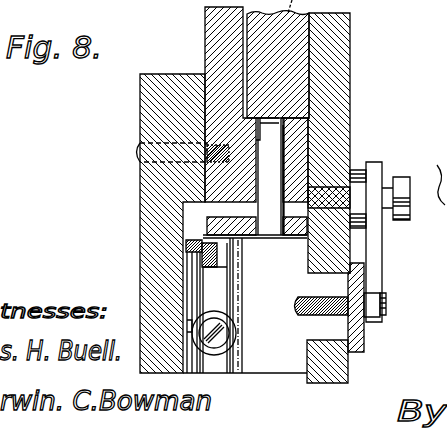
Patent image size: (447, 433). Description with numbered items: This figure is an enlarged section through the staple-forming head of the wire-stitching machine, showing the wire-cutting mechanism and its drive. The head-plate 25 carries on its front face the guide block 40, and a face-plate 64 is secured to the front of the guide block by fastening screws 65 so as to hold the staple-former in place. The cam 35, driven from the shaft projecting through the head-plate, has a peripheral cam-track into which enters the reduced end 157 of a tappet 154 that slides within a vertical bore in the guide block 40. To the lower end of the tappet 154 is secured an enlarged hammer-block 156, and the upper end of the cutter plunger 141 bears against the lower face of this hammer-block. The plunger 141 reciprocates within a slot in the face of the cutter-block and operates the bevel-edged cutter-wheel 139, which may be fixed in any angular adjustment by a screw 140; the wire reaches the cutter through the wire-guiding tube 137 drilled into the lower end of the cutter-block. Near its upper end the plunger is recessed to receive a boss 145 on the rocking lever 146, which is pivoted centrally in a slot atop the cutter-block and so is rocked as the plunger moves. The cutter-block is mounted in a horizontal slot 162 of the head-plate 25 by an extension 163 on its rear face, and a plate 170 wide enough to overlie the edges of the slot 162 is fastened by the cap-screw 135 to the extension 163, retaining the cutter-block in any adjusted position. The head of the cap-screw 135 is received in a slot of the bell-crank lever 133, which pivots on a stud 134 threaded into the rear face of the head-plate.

The head-plate 25 is at (345, 42).
The cam 35 is at (303, 60).
The guide block 40 is at (230, 57).
The face-plate 64 is at (153, 190).
The fastening screws 65 is at (136, 148).
The bell-crank lever 133 is at (377, 175).
The stud 134 is at (385, 226).
The cap-screw 135 is at (386, 294).
The wire-guiding tube 137 is at (213, 362).
The cutter-wheel 139 is at (240, 362).
The screw 140 is at (230, 333).
The cutter plunger 141 is at (215, 297).
The boss 145 is at (217, 258).
The rocking lever 146 is at (203, 238).
The tappet 154 is at (270, 162).
The hammer-block 156 is at (292, 237).
The reduced end of tappet 157 is at (283, 128).
The horizontal slot 162 is at (347, 360).
The extension 163 is at (320, 312).
The plate 170 is at (362, 337).